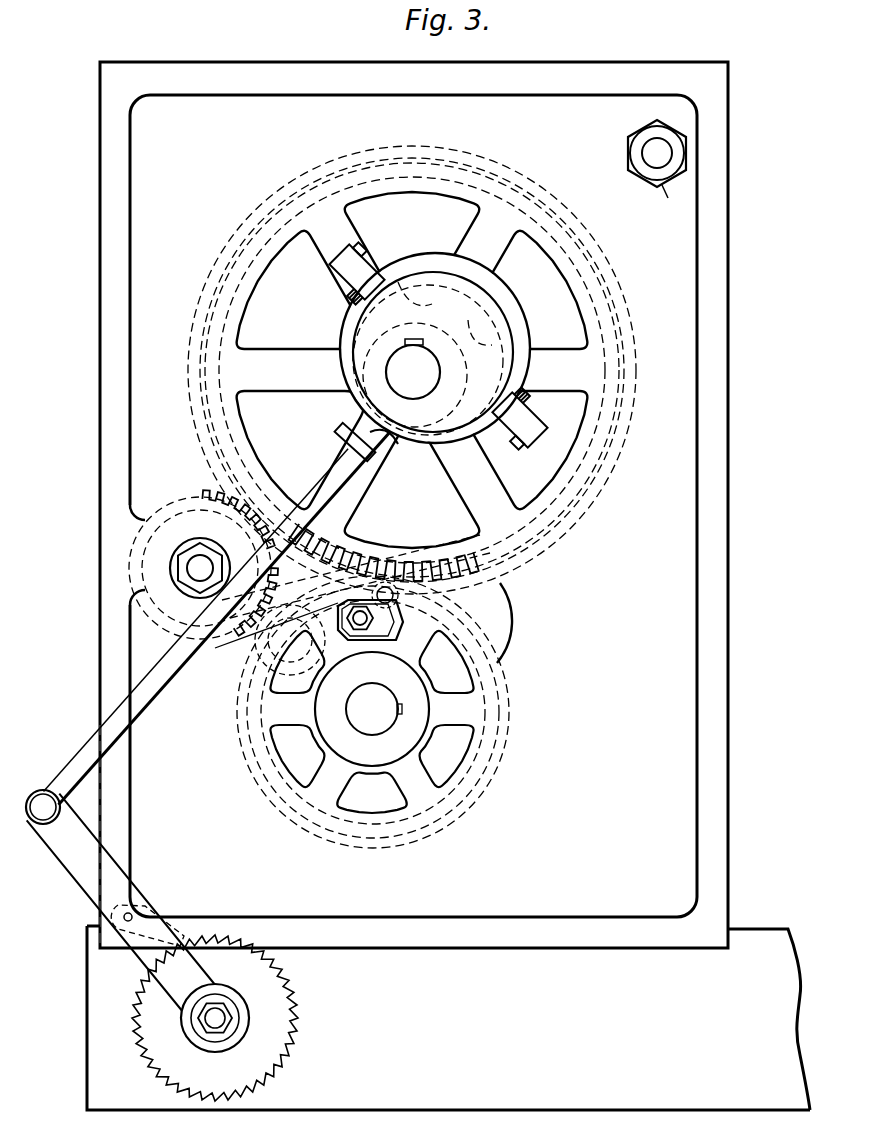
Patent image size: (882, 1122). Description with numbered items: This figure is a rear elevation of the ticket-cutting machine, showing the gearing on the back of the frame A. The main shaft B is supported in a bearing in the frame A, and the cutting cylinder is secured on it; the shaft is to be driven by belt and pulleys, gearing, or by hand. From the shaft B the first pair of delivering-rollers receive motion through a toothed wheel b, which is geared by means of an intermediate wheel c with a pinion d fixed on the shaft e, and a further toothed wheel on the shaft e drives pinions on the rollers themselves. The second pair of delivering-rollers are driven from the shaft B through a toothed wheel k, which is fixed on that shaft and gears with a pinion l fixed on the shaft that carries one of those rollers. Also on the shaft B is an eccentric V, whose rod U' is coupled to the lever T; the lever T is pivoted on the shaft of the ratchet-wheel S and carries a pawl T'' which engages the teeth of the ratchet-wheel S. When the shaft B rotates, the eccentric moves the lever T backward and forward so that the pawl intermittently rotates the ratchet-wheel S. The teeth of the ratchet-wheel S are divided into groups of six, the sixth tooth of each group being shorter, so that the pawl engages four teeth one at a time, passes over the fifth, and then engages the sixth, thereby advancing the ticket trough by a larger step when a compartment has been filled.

The frame A is at (448, 586).
The eccentric V is at (438, 346).
The shaft B is at (413, 369).
The toothed wheel k is at (412, 370).
The pinion d is at (305, 583).
The toothed wheel b is at (214, 490).
The intermediate wheel c is at (200, 568).
The shaft e is at (290, 640).
The pinion l is at (446, 609).
The eccentric rod U' is at (221, 614).
The lever T is at (120, 900).
The pawl T'' is at (159, 918).
The ratchet-wheel S is at (260, 1034).